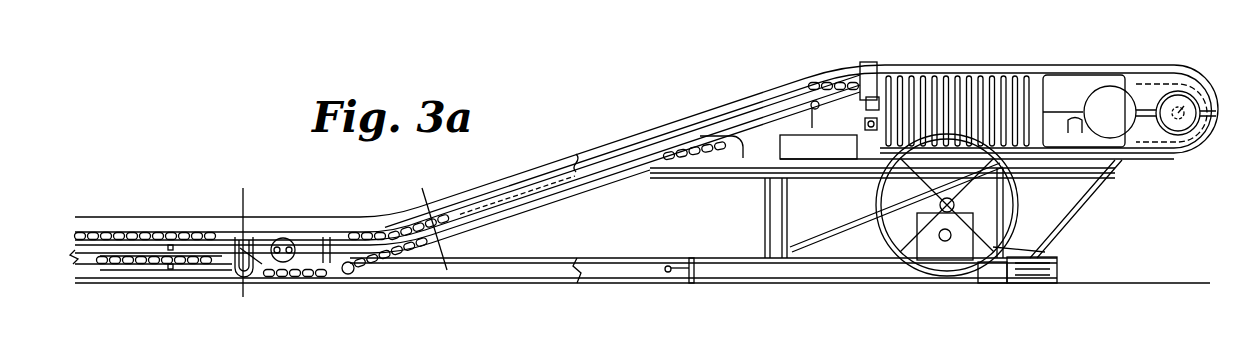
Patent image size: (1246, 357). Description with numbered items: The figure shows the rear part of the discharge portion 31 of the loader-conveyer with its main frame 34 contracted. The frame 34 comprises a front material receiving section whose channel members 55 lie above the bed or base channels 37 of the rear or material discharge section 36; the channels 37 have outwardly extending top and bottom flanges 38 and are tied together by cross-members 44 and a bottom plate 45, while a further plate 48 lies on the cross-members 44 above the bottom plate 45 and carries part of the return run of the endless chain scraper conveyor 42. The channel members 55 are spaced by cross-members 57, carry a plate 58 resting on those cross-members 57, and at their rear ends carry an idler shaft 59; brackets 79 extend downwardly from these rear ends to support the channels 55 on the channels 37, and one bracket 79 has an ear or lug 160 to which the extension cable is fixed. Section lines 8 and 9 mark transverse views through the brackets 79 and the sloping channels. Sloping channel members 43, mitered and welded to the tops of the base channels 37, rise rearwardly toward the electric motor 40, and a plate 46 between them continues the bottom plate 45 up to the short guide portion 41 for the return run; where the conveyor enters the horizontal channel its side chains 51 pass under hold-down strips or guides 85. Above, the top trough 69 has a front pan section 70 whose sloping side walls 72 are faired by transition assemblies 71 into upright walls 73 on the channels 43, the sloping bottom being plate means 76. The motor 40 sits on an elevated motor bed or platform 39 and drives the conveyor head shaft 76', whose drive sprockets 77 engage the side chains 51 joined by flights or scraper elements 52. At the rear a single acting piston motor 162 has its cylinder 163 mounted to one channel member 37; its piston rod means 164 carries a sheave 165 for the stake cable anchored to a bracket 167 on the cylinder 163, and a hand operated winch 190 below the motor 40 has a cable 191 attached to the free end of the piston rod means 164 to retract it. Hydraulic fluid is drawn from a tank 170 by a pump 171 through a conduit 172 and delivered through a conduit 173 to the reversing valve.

The discharge portion 31 is at (110, 214).
The cross-members 57 is at (170, 246).
The ear or lug 160 is at (230, 256).
The flights or scraper elements 52 is at (207, 238).
The section line 8- 8 is at (218, 192).
The channel members 55 is at (266, 243).
The plate 58 is at (275, 248).
The idler shaft 59 is at (292, 245).
The front trough or pan section 70 is at (327, 232).
The transition assemblies 71 is at (395, 217).
The section line 9- 9 is at (398, 203).
The endless chain scraper conveyor 42 is at (458, 198).
The plate means 76 is at (517, 165).
The upright walls 73 is at (533, 176).
The top trough 69 is at (555, 173).
The sloping side walls 72 is at (580, 165).
The plate 46 is at (545, 209).
The channel members 43 is at (614, 184).
The guide portion 41 is at (797, 142).
The side chains 51 is at (127, 265).
The conduit 173 is at (875, 98).
The electric motor 40 is at (950, 82).
The conveyor drive sprockets 77 is at (1163, 86).
The conveyor head shaft 76' is at (1191, 85).
The elevated motor bed or platform 39 is at (1112, 163).
The cable 191 is at (1053, 248).
The sheave 165 is at (1040, 276).
The piston rod means 164 is at (1010, 283).
The bracket 167 is at (998, 275).
The hand operated winch 190 is at (945, 250).
The cylinder 163 is at (861, 272).
The single acting piston motor 162 is at (812, 268).
The top and bottom flanges 38 is at (680, 273).
The rear or material discharge section 36 is at (541, 272).
The bed or base channels 37 is at (598, 266).
The main frame 34 is at (503, 262).
The hold-down strips or guides 85 is at (343, 278).
The brackets 79 is at (247, 254).
The bottom plate 45 is at (187, 278).
The cross-members 44 is at (172, 268).
The plate 48 is at (88, 265).
The tank 170 is at (810, 128).
The conduit 172 is at (873, 125).
The pump 171 is at (868, 140).